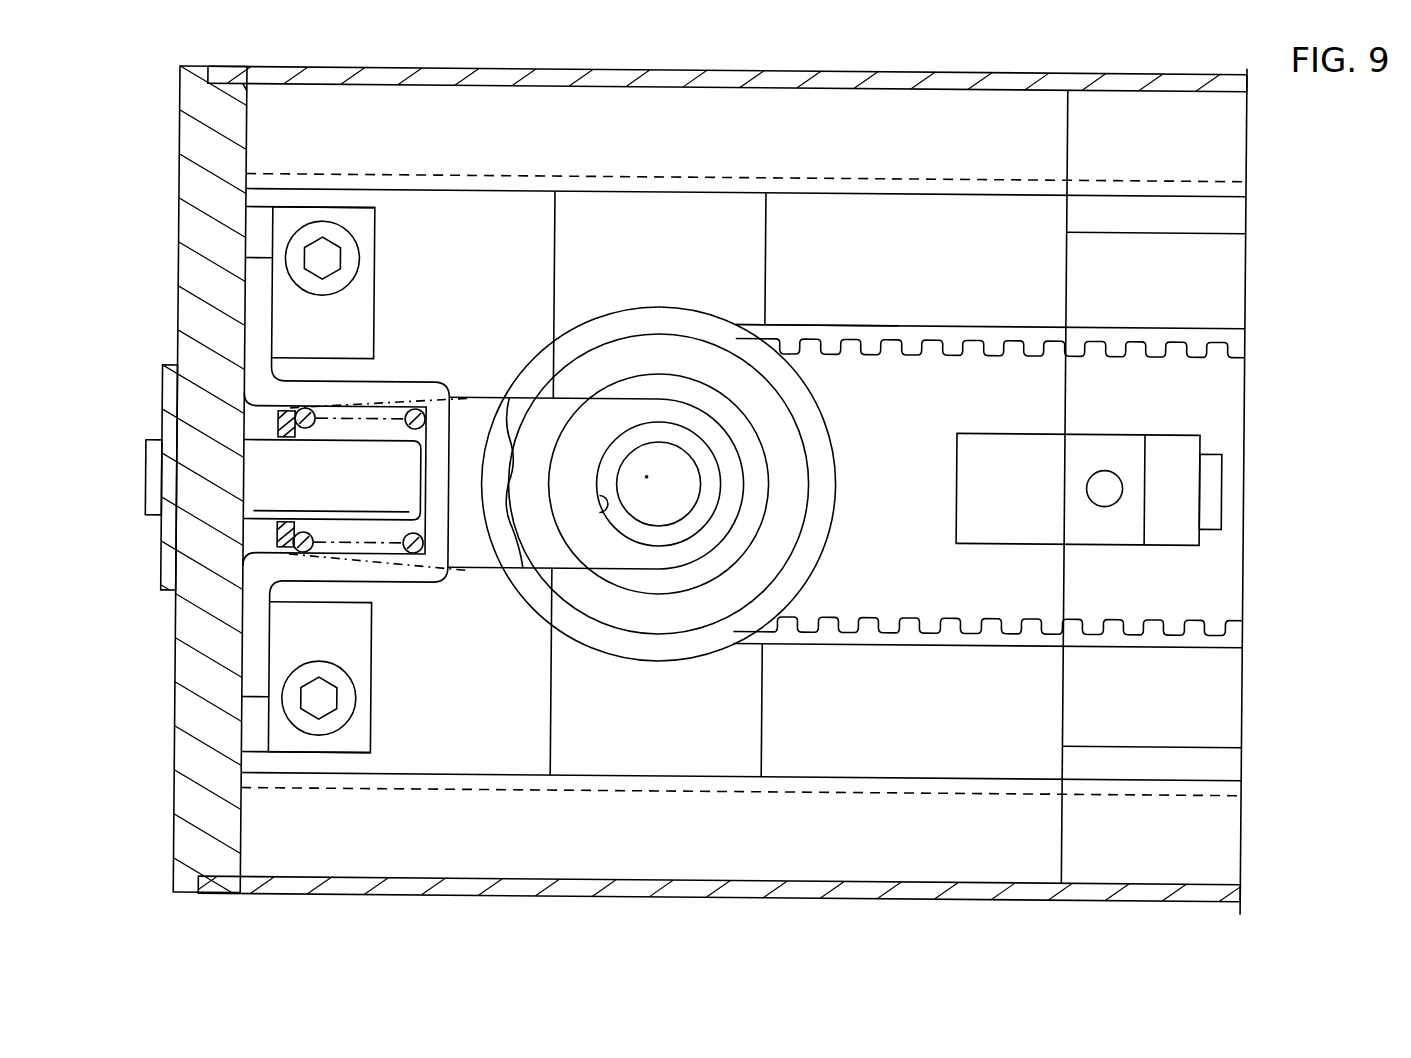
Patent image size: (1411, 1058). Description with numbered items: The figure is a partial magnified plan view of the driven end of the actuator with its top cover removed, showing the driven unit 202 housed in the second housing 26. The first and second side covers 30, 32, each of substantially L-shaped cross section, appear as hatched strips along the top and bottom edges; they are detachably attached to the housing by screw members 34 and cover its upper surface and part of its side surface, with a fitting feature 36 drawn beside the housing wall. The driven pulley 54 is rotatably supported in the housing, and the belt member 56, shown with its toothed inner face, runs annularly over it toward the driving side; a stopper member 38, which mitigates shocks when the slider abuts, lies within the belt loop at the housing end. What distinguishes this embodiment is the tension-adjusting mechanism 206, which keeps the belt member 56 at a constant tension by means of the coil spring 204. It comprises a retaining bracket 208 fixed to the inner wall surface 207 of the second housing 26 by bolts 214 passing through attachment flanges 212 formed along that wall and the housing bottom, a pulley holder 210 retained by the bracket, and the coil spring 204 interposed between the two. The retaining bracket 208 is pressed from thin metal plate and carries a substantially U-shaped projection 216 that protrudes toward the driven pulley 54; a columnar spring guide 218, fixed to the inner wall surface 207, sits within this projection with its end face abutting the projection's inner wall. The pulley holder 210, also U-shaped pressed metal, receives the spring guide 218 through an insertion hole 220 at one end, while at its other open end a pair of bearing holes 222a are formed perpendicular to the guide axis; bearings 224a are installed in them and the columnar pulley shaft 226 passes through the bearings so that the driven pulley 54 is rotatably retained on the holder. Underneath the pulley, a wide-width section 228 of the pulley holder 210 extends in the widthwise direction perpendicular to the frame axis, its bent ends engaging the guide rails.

The second housing 26 is at (190, 747).
The first side cover 30 is at (716, 888).
The second side cover 32 is at (624, 80).
The screw member 34 is at (155, 473).
The flange 36 is at (170, 567).
The stopper member 38 is at (1214, 482).
The driven pulley 54 is at (656, 316).
The belt member 56 is at (931, 332).
The driven unit 202 is at (475, 838).
The coil spring 204 is at (411, 408).
The tension-adjusting mechanism 206 is at (790, 311).
The inner wall surface 207 is at (250, 318).
The retaining bracket 208 is at (256, 648).
The pulley holder 210 is at (265, 533).
The attachment flange 212 is at (355, 302).
The bolt 214 is at (330, 256).
The projection 216 is at (415, 578).
The spring guide 218 is at (258, 452).
The insertion hole 220 is at (285, 437).
The bearing hole 222a is at (600, 490).
The bearing 224a is at (606, 472).
The pulley shaft 226 is at (683, 470).
The wide-width section 228 is at (760, 242).